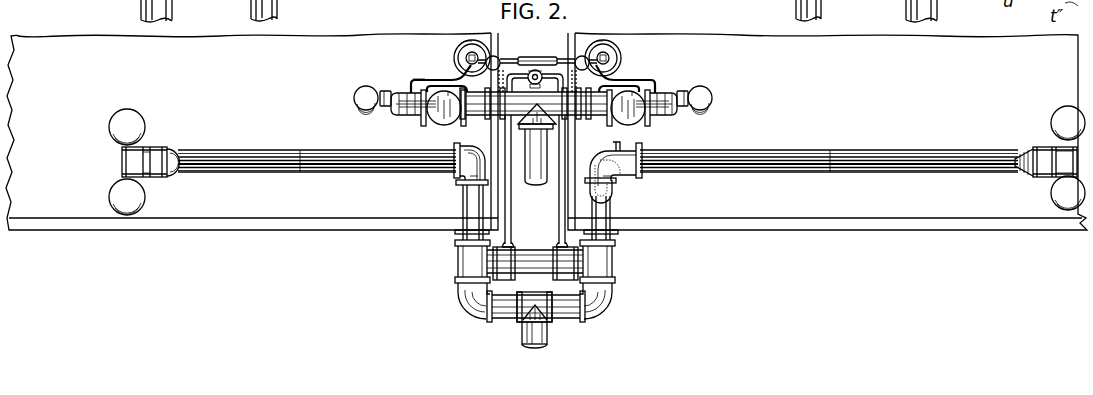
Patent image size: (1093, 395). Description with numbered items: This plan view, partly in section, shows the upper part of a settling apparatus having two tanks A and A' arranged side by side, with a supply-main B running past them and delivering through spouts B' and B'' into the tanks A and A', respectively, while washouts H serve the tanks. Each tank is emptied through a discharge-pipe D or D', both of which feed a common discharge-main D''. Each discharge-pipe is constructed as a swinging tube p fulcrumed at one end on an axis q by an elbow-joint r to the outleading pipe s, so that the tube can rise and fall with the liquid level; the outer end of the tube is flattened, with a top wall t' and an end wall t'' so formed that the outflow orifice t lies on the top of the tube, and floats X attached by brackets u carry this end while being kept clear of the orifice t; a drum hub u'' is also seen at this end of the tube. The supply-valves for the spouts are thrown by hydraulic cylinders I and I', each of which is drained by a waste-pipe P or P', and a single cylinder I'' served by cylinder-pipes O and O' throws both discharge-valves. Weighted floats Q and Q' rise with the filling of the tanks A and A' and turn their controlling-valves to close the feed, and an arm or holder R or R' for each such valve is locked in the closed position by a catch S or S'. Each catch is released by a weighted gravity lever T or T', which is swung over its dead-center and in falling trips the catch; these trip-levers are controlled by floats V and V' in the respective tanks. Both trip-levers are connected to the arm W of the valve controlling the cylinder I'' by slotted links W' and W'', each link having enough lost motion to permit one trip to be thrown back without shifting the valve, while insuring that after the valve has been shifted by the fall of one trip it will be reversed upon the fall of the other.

The washout H is at (141, 7).
The tank A' is at (252, 131).
The tank A is at (827, 131).
The float X is at (138, 117).
The bracket u is at (592, 184).
The orifice t is at (599, 173).
The top wall t' is at (600, 150).
The end wall t'' is at (608, 153).
The discharge-pipe D' is at (317, 150).
The discharge-pipe D is at (829, 150).
The swinging tube p is at (338, 167).
The axis q is at (474, 147).
The elbow-joint r is at (476, 169).
The outleading pipe s is at (466, 198).
The supply-main B is at (537, 154).
The cylinder-pipe O' is at (515, 181).
The cylinder-pipe O is at (554, 181).
The gravity lever T' is at (533, 90).
The gravity lever T is at (548, 77).
The cylinder I' is at (443, 117).
The cylinder I is at (628, 117).
The spout B'' is at (404, 114).
The spout B' is at (662, 114).
The float Q' is at (358, 100).
The float Q is at (708, 100).
The waste-pipe P' is at (429, 71).
The waste-pipe P is at (644, 73).
The arm or holder R' is at (439, 64).
The arm or holder R is at (638, 71).
The catch S' is at (424, 71).
The catch S is at (643, 74).
The float V' is at (461, 58).
The float V is at (612, 58).
The drum hub u'' is at (545, 31).
The slotted link W'' is at (503, 64).
The slotted link W' is at (577, 64).
The arm W is at (537, 50).
The cylinder I'' is at (535, 276).
The discharge-main D'' is at (545, 335).